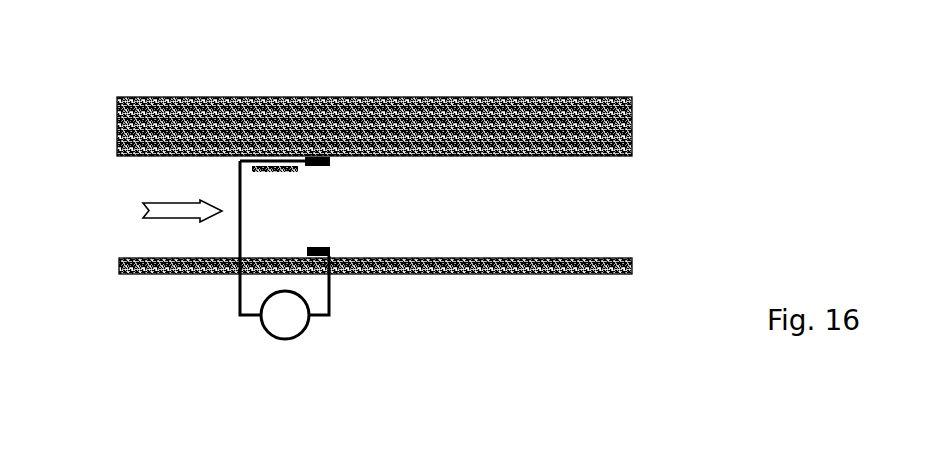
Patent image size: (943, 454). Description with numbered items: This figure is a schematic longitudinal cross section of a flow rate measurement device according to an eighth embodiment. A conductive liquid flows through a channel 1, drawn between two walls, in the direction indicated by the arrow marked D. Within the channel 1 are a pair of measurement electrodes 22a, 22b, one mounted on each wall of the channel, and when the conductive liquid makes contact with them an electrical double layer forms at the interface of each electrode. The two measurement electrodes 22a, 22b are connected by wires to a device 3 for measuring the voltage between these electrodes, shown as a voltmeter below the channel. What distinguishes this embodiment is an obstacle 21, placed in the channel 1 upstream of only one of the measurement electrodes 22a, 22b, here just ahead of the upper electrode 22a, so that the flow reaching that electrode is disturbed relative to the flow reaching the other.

The channel 1 is at (110, 224).
The flow direction D is at (177, 209).
The obstacle 21 is at (273, 156).
The measurement electrode 22a is at (330, 161).
The measurement electrode 22b is at (330, 252).
The device for measuring the voltage 3 is at (288, 339).